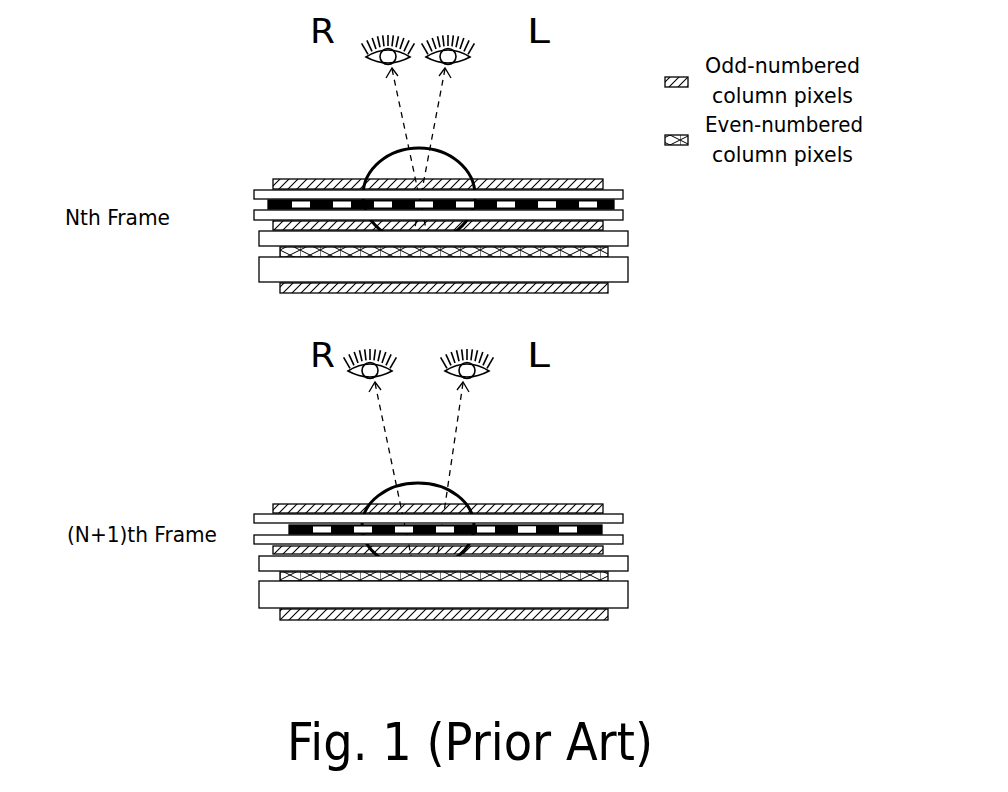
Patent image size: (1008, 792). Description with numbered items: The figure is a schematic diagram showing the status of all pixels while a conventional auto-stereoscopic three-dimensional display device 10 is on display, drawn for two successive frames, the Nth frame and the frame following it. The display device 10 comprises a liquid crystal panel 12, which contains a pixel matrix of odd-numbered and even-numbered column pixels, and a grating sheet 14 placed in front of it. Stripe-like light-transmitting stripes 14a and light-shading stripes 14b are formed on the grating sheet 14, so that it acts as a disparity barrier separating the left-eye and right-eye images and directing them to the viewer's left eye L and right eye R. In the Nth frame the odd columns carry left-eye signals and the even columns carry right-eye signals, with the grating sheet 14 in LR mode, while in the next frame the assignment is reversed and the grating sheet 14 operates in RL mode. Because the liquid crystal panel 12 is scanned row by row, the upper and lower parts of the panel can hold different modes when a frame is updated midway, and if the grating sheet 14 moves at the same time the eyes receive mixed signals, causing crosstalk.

The auto-stereoscopic 3D display device 10 is at (256, 163).
The liquid crystal panel 12 is at (245, 230).
The grating sheet 14 is at (617, 205).
The light-transmitting stripe 14a is at (542, 203).
The light-shading stripe 14b is at (572, 200).